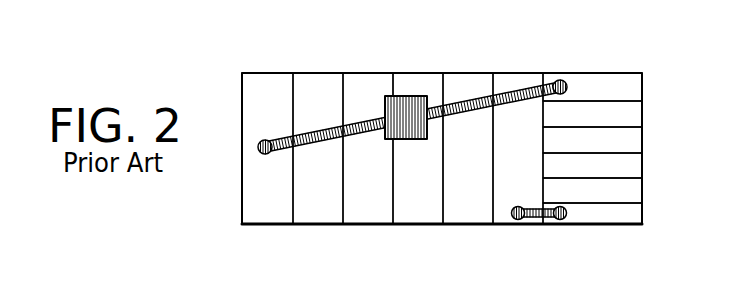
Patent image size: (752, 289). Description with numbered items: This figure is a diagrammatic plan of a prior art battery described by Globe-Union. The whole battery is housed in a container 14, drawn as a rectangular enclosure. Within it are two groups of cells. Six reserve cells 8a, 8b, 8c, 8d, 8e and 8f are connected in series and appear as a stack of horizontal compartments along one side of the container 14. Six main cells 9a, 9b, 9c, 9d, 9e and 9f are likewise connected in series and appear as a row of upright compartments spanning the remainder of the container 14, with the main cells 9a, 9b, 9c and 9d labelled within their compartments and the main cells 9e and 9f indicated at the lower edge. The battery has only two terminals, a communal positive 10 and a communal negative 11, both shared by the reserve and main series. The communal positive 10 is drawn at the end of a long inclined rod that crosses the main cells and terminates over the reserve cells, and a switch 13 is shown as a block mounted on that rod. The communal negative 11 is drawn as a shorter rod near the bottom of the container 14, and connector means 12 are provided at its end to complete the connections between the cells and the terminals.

The reserve cell 8a is at (603, 217).
The reserve cell 8b is at (630, 197).
The reserve cell 8c is at (632, 167).
The reserve cell 8d is at (625, 145).
The reserve cell 8e is at (628, 116).
The reserve cell 8f is at (600, 85).
The main cell 9a is at (530, 183).
The main cell 9b is at (482, 183).
The main cell 9c is at (430, 183).
The main cell 9d is at (383, 183).
The main cell 9e is at (335, 207).
The main cell 9f is at (273, 213).
The communal positive terminal 10 is at (266, 140).
The communal negative terminal 11 is at (511, 213).
The connector means 12 is at (533, 217).
The switch 13 is at (406, 96).
The container 14 is at (463, 73).